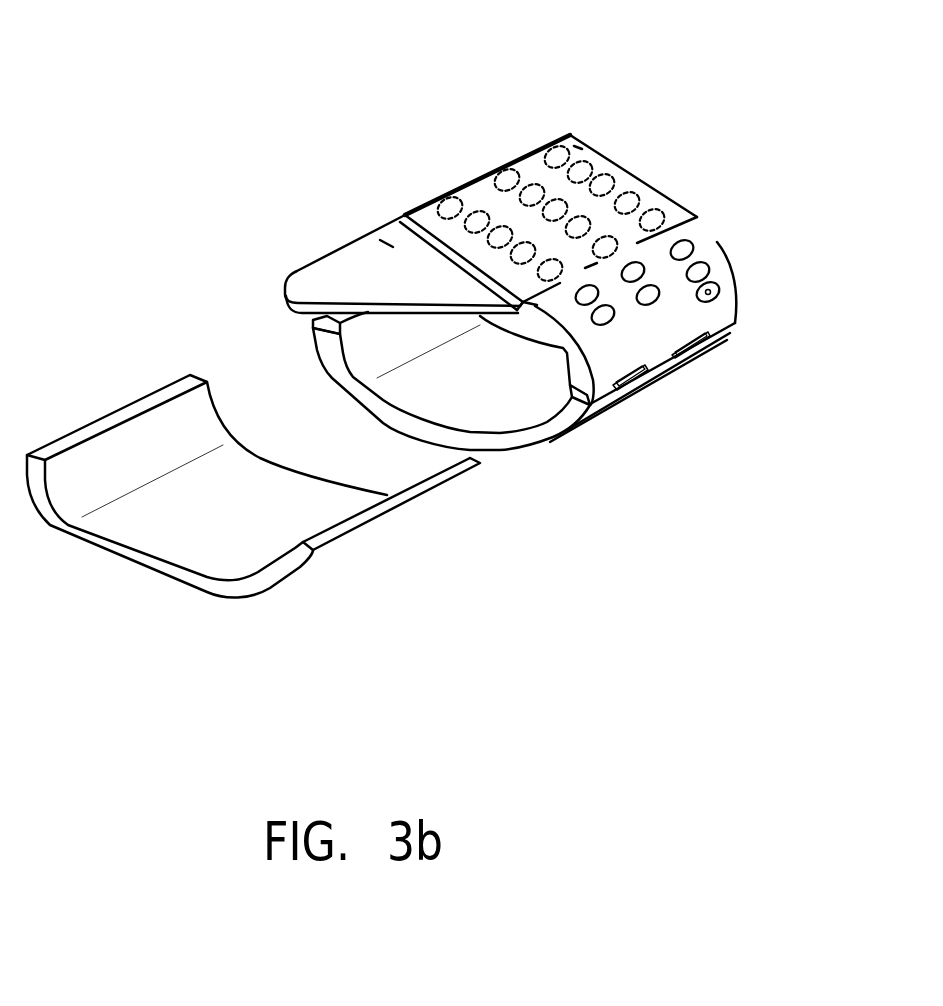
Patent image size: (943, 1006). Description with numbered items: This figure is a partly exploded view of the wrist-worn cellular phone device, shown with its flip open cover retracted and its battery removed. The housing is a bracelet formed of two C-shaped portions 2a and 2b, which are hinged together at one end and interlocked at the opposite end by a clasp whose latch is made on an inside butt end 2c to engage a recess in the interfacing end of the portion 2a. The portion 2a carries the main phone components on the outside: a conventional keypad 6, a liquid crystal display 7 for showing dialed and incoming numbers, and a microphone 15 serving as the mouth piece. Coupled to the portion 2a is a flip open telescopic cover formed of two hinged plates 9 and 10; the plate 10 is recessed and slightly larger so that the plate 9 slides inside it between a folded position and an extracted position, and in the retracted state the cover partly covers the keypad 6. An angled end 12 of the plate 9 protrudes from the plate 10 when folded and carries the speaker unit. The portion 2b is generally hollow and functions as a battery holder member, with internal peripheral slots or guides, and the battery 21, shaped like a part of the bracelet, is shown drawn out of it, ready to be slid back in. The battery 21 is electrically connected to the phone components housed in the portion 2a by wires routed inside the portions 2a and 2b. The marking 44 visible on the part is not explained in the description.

The C-shaped portion 2a is at (723, 310).
The C-shaped portion 2b is at (553, 443).
The inside butt end 2c is at (327, 318).
The keypad 6 is at (613, 178).
The liquid crystal display 7 is at (484, 173).
The plate 9 is at (393, 247).
The plate 10 is at (582, 149).
The end of the plate 12 is at (340, 270).
The microphone 15 is at (713, 287).
The battery 21 is at (197, 547).
The marking 44 is at (346, 444).